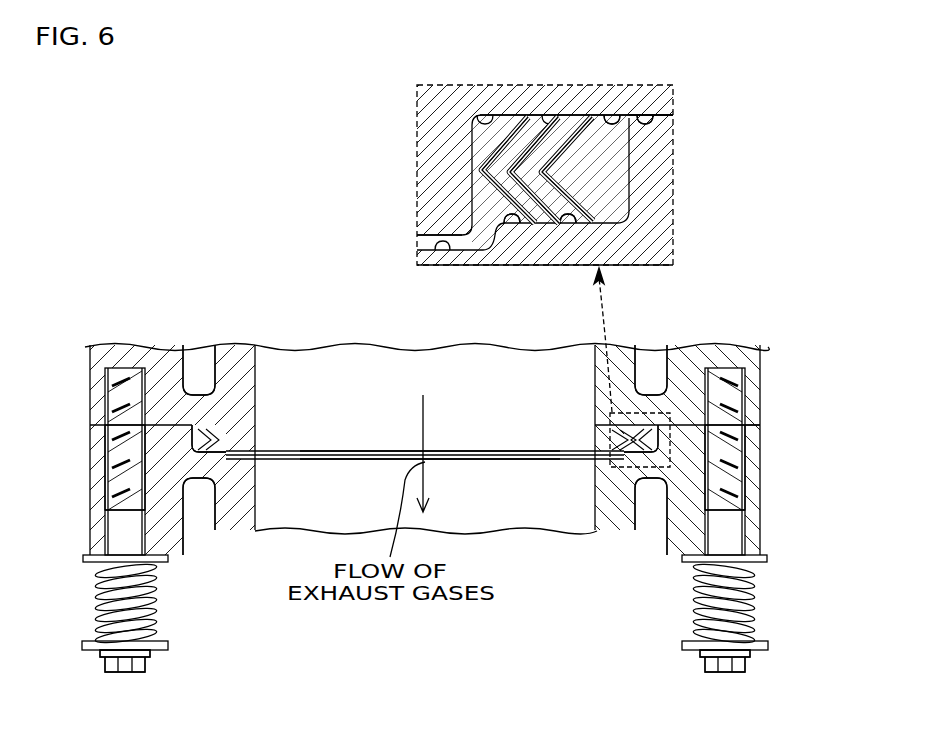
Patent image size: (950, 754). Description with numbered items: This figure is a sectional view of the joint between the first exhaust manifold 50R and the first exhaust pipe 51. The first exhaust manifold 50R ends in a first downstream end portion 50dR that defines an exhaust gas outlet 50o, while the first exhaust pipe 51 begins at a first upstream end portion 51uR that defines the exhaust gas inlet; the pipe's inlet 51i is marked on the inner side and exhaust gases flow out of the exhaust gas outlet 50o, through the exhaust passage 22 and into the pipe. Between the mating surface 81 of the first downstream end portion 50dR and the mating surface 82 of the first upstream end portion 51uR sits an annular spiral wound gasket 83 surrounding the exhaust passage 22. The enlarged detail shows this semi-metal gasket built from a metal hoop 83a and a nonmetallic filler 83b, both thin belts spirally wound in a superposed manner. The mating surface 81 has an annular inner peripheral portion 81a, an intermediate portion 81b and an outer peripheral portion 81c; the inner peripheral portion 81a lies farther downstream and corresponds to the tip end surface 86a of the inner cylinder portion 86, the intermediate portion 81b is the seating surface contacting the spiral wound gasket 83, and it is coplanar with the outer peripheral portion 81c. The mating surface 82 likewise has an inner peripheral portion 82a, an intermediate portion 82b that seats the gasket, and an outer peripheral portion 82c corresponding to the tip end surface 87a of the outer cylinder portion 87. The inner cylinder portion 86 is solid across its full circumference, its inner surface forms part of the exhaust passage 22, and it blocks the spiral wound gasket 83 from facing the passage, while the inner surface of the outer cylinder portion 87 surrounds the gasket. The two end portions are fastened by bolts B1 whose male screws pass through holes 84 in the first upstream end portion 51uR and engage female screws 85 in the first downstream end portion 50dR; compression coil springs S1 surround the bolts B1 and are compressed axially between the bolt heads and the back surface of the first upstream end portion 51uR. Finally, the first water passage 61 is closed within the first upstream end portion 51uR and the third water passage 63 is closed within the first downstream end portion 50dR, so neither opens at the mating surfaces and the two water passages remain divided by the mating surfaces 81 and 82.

The exhaust passage 22 is at (491, 391).
The first exhaust manifold 50R is at (100, 368).
The first downstream end portion 50dR is at (762, 364).
The exhaust gas outlet 50o is at (486, 460).
The first exhaust pipe 51 is at (97, 463).
The inlet of the first exhaust pipe 51i is at (383, 451).
The first upstream end portion 51uR is at (673, 233).
The first water passage 61 is at (202, 540).
The third water passage 63 is at (200, 362).
The mating surface of the first downstream end portion 81 is at (478, 115).
The inner peripheral portion 81a is at (397, 255).
The intermediate portion 81b is at (619, 116).
The outer peripheral portion 81c is at (648, 116).
The mating surface of the first upstream end portion 82 is at (508, 262).
The inner peripheral portion 82a is at (437, 262).
The intermediate portion 82b is at (568, 262).
The outer peripheral portion 82c is at (694, 126).
The spiral wound gasket 83 is at (482, 178).
The hoop 83a is at (548, 117).
The filler 83b is at (520, 115).
The holes 84 is at (108, 485).
The female screws 85 is at (108, 402).
The inner cylinder portion 86 is at (417, 165).
The tip end surface of the inner cylinder portion 86a is at (430, 246).
The outer cylinder portion 87 is at (673, 188).
The tip end surface of the outer cylinder portion 87a is at (673, 112).
The springs S1 is at (97, 605).
The bolts B1 is at (115, 674).